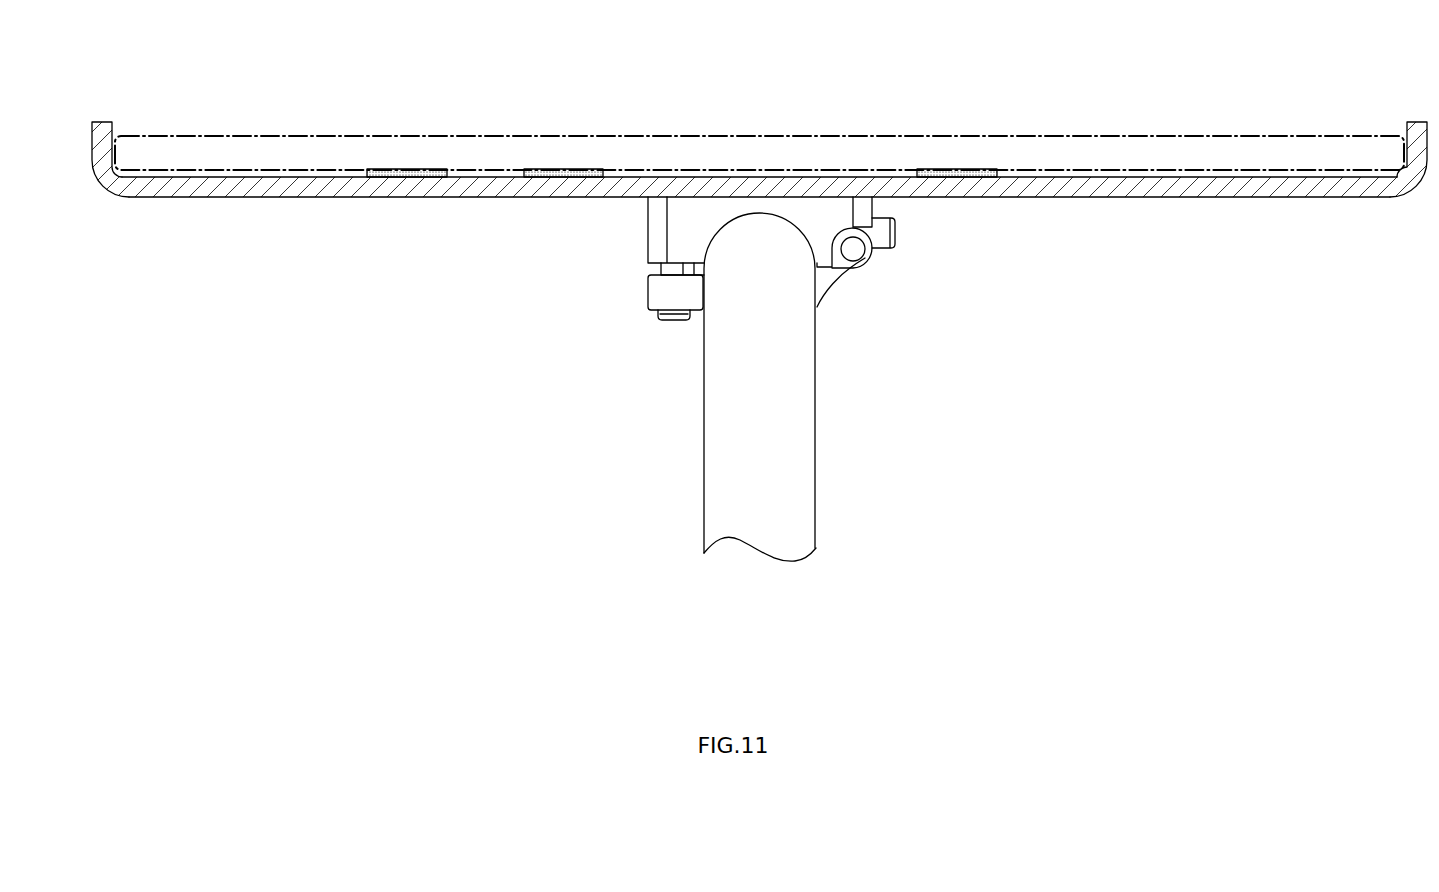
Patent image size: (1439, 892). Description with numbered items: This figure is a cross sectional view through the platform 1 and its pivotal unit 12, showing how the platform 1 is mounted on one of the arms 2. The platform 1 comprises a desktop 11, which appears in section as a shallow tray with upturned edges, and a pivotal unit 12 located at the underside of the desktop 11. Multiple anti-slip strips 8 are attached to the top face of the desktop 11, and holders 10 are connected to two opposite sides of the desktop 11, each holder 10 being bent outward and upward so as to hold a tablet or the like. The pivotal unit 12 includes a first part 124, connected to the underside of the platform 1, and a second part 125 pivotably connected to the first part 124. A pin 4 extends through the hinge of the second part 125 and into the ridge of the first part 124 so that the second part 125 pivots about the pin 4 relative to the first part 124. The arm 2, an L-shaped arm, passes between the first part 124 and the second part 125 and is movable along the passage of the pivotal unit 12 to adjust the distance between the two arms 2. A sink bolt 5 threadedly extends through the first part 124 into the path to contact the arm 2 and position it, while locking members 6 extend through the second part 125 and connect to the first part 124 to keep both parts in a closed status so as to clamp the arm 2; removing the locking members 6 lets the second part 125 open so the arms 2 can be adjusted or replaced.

The platform 1 is at (719, 166).
The holder 10 is at (107, 127).
The desktop 11 is at (273, 198).
The anti-slip strip 8 is at (400, 170).
The pivotal unit 12 is at (661, 279).
The first part 124 is at (657, 229).
The second part 125 is at (655, 295).
The locking member 6 is at (680, 322).
The pin 4 is at (853, 252).
The sink bolt 5 is at (893, 233).
The arm 2 is at (696, 468).